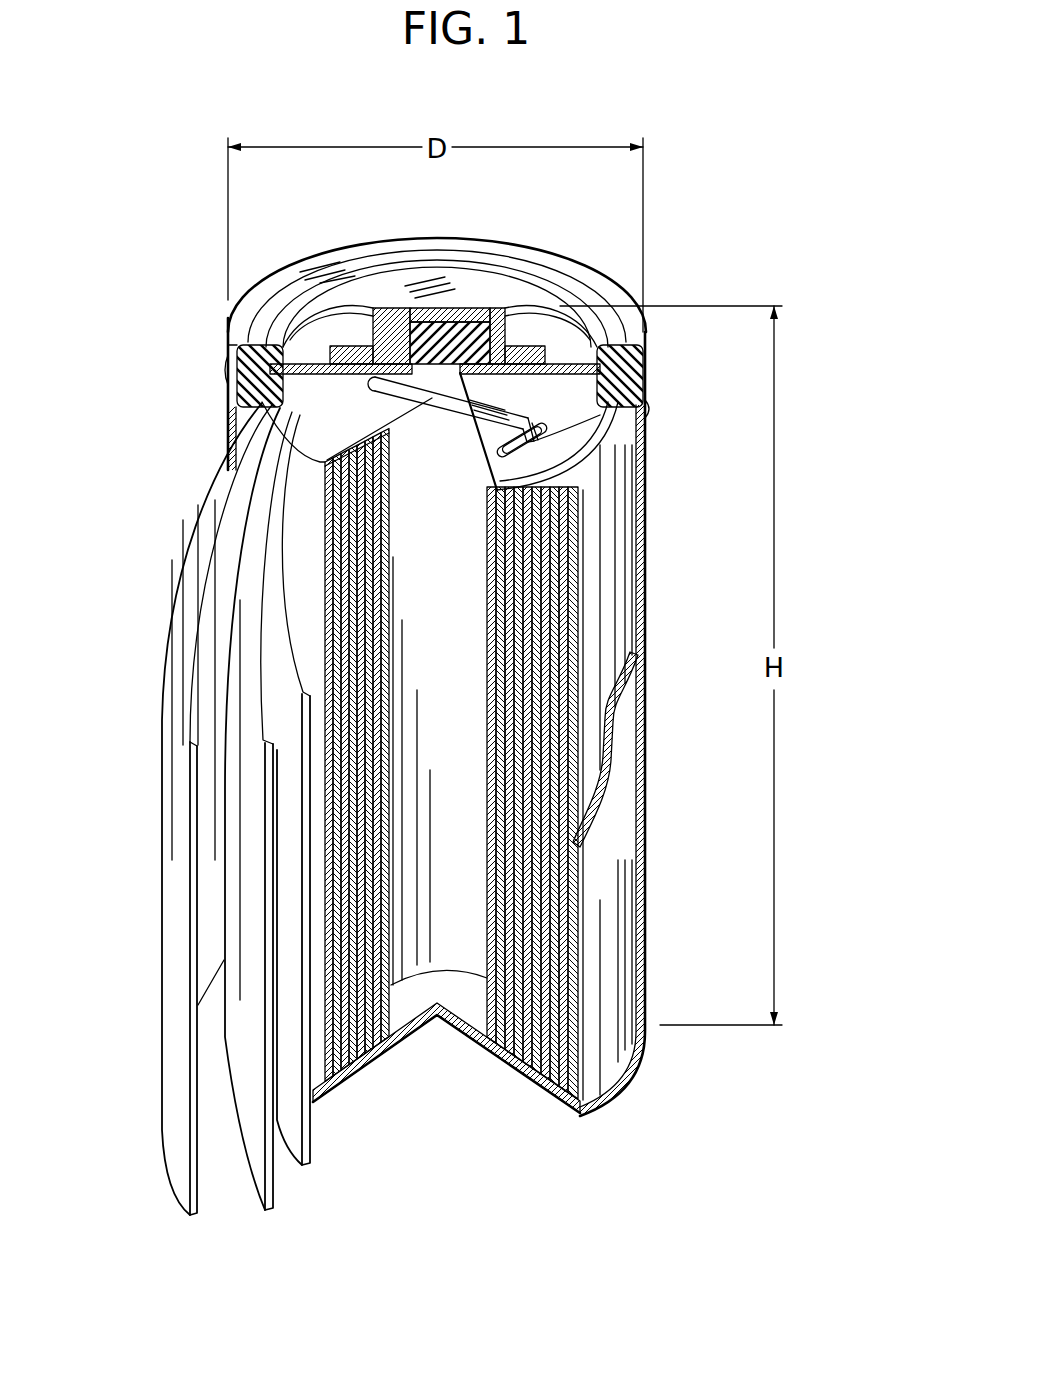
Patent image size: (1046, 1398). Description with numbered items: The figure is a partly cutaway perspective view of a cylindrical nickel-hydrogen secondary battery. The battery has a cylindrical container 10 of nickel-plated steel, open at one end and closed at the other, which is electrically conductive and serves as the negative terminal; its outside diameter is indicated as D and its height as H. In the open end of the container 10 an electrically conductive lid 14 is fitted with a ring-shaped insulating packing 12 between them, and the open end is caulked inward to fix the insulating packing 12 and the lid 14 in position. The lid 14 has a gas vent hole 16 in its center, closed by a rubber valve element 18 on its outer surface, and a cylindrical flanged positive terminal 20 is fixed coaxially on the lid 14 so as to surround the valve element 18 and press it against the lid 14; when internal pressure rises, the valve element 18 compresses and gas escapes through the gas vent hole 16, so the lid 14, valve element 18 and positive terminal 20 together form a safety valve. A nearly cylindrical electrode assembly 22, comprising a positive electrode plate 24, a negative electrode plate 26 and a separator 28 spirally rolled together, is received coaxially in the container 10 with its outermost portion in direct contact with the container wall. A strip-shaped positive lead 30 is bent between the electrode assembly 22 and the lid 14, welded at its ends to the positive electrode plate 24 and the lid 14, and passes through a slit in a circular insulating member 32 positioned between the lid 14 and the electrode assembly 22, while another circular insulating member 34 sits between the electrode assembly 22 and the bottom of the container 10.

The container 10 is at (640, 714).
The insulating packing 12 is at (258, 385).
The lid 14 is at (312, 343).
The gas vent hole 16 is at (446, 378).
The valve element 18 is at (410, 307).
The positive terminal 20 is at (456, 287).
The electrode assembly 22 is at (620, 603).
The positive electrode plate 24 is at (311, 1162).
The negative electrode plate 26 is at (190, 1212).
The separator 28 is at (270, 1212).
The positive lead 30 is at (568, 412).
The insulating member 32 is at (563, 440).
The insulating member 34 is at (460, 1008).